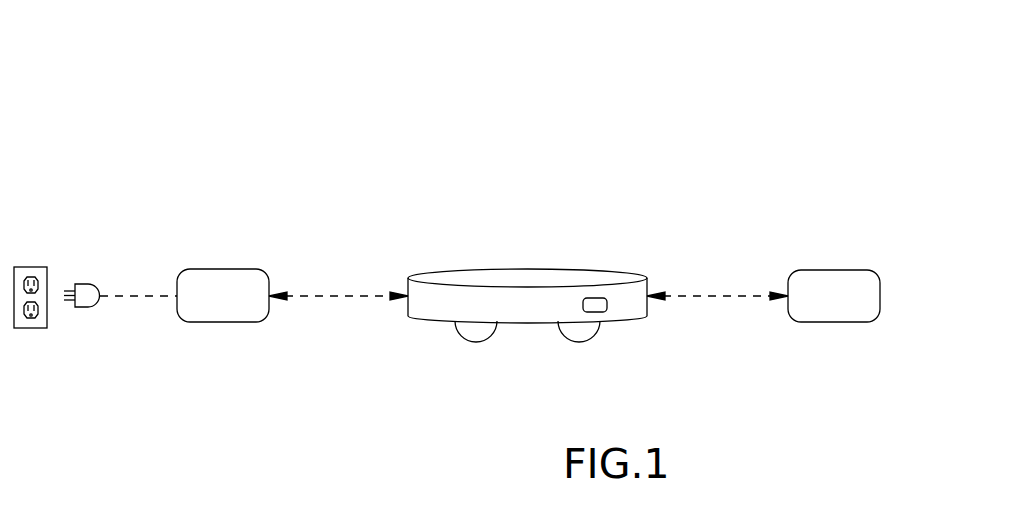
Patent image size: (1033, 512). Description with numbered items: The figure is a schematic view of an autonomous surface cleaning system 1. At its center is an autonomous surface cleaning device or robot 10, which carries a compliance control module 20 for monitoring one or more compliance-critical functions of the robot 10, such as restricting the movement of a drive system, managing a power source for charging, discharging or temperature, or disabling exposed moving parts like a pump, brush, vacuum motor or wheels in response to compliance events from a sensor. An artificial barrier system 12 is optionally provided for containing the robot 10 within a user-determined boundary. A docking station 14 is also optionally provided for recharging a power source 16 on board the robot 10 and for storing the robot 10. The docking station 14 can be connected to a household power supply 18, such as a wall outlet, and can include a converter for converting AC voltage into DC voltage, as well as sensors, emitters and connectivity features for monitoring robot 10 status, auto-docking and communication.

The autonomous surface cleaning system 1 is at (697, 57).
The autonomous surface cleaning device or robot 10 is at (535, 292).
The artificial barrier system 12 is at (860, 288).
The docking station 14 is at (247, 288).
The power source 16 is at (82, 286).
The household power supply 18 is at (42, 322).
The compliance control module 20 is at (597, 307).